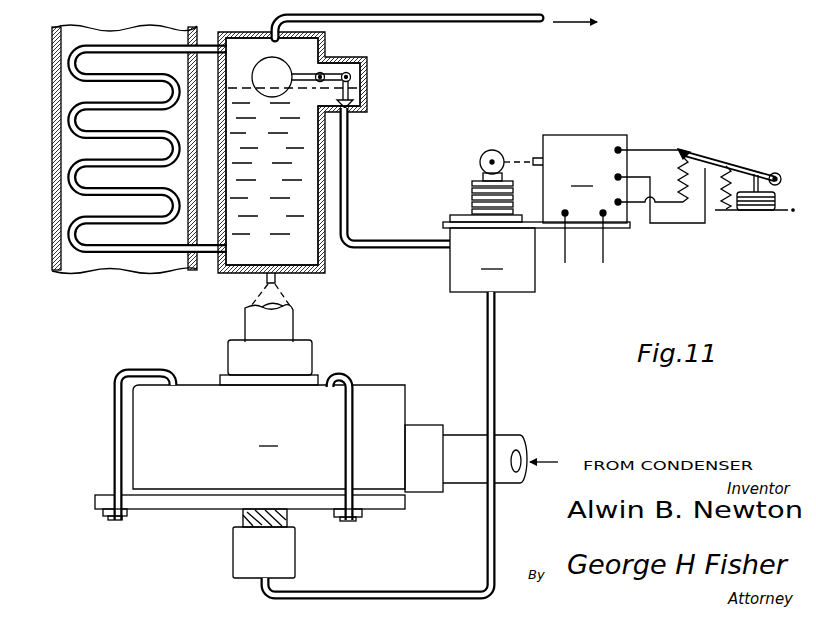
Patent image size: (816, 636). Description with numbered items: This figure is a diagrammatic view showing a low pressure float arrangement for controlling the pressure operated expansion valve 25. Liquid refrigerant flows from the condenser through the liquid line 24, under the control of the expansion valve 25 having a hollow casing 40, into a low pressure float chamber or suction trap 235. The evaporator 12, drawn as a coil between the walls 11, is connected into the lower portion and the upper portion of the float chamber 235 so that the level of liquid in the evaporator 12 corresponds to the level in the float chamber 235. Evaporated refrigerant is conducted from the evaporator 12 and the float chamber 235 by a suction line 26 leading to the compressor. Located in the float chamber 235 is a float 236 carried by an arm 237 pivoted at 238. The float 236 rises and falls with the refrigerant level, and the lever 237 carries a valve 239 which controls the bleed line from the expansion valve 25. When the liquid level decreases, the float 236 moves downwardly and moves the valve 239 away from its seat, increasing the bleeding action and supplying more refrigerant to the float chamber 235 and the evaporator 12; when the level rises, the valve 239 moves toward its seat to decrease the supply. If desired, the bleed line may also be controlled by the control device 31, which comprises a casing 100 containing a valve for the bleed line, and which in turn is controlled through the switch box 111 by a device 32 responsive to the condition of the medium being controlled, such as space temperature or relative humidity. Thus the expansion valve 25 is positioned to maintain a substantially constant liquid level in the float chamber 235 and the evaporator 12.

The evaporator wall 11 is at (52, 178).
The evaporator 12 is at (108, 253).
The liquid line 24 is at (291, 326).
The expansion valve 25 is at (377, 372).
The suction line 26 is at (440, 24).
The control device 31 is at (553, 283).
The device responsive to the condition of the medium 32 is at (748, 222).
The hollow casing 40 is at (288, 416).
The casing 100 is at (496, 221).
The switch box 111 is at (585, 199).
The low pressure float chamber 235 is at (326, 266).
The float 236 is at (260, 60).
The arm 237 is at (304, 68).
The pivot 238 is at (323, 73).
The valve 239 is at (367, 103).